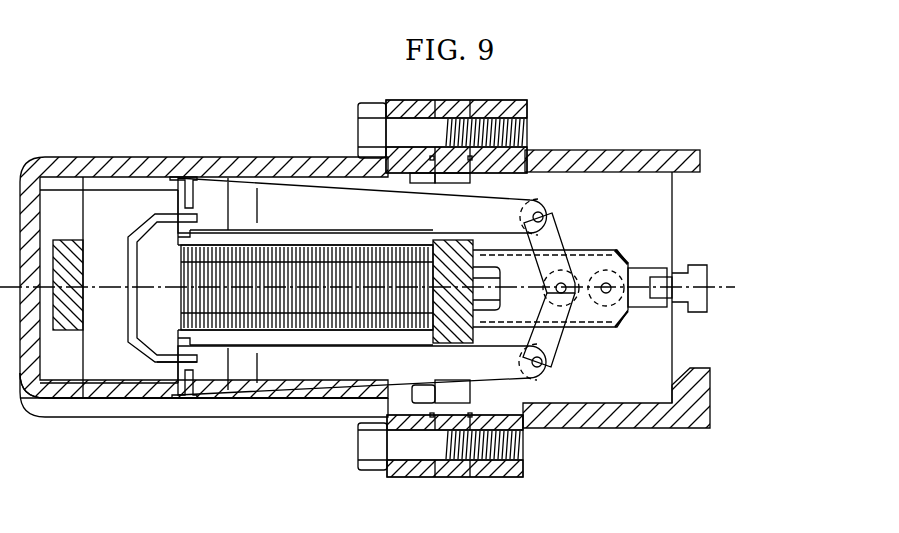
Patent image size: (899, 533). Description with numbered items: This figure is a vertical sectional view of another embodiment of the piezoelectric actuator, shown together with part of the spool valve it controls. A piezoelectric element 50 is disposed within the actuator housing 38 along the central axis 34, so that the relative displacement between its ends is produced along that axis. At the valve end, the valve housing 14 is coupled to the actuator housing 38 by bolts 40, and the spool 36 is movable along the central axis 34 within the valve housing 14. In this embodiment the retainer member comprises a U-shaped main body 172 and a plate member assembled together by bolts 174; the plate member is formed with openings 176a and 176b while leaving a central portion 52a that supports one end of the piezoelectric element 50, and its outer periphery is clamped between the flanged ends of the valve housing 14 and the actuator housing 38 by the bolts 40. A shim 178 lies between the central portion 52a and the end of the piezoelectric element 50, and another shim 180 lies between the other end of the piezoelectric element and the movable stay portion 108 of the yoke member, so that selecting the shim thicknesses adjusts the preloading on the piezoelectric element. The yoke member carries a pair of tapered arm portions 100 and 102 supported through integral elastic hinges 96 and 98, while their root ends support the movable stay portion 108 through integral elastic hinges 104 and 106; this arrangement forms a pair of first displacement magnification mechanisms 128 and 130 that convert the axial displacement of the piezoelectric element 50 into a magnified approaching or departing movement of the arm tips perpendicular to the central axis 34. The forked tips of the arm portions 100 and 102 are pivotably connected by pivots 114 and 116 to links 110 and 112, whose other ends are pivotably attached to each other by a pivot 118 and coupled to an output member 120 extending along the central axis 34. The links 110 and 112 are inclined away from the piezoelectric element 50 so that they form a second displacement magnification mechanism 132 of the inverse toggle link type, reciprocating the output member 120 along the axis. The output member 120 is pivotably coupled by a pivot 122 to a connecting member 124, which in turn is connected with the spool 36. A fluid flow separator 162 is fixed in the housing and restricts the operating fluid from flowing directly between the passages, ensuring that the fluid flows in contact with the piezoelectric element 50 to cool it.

The valve housing 14 is at (612, 162).
The central axis 34 is at (157, 288).
The spool 36 is at (699, 265).
The actuator housing 38 is at (136, 162).
The bolts 40 is at (372, 112).
The piezoelectric element 50 is at (307, 287).
The support portion 52a is at (442, 306).
The integral elastic hinge 96 is at (196, 208).
The integral elastic hinge 98 is at (190, 362).
The arm portion 100 is at (298, 202).
The arm portion 102 is at (312, 382).
The integral elastic hinge 104 is at (215, 226).
The integral elastic hinge 106 is at (205, 346).
The movable stay portion 108 is at (147, 262).
The link 110 is at (568, 228).
The link 112 is at (558, 338).
The pivot 114 is at (548, 214).
The pivot 116 is at (540, 368).
The pivot 118 is at (555, 284).
The output member 120 is at (608, 322).
The pivot 122 is at (630, 266).
The connecting member 124 is at (648, 307).
The first displacement magnification mechanism 128 is at (174, 200).
The first displacement magnification mechanism 130 is at (174, 375).
The second displacement magnification mechanism 132 is at (574, 335).
The fluid flow separator 162 is at (598, 250).
The U-shaped main body 172 is at (78, 312).
The bolts 174 is at (492, 268).
The opening 176a is at (460, 186).
The opening 176b is at (470, 392).
The shim 178 is at (445, 282).
The shim 180 is at (190, 270).